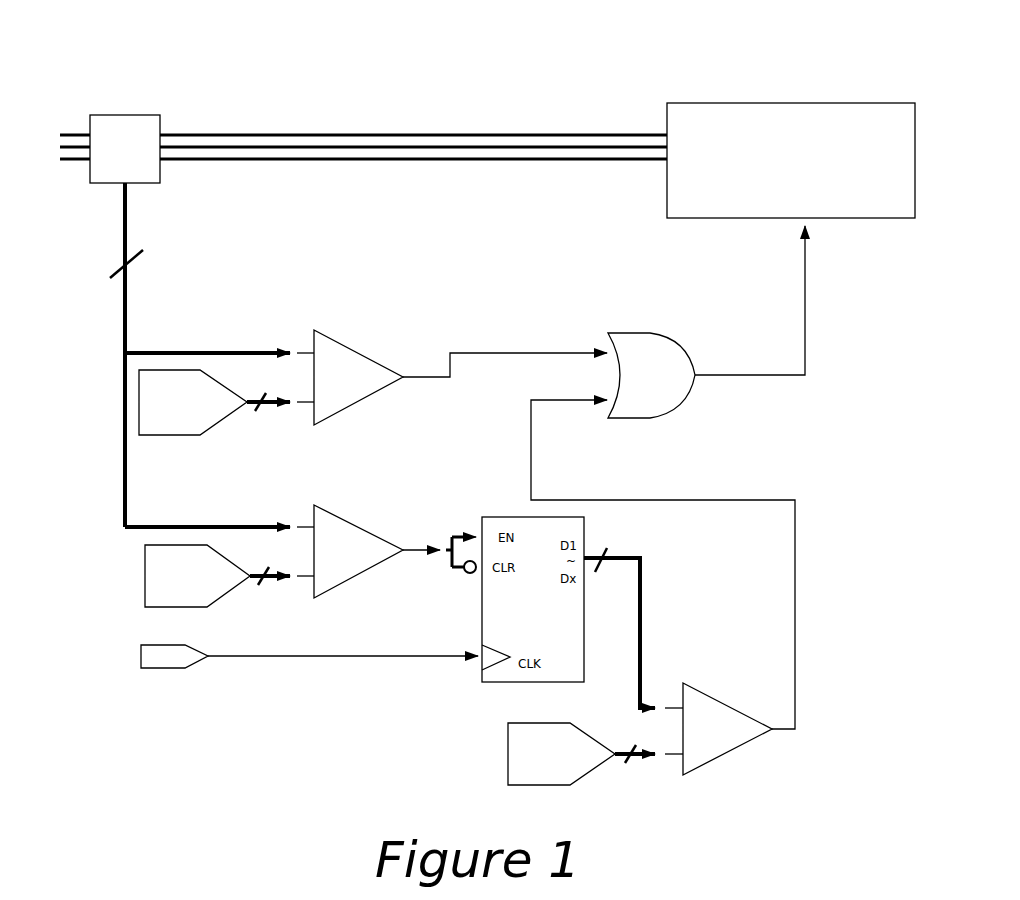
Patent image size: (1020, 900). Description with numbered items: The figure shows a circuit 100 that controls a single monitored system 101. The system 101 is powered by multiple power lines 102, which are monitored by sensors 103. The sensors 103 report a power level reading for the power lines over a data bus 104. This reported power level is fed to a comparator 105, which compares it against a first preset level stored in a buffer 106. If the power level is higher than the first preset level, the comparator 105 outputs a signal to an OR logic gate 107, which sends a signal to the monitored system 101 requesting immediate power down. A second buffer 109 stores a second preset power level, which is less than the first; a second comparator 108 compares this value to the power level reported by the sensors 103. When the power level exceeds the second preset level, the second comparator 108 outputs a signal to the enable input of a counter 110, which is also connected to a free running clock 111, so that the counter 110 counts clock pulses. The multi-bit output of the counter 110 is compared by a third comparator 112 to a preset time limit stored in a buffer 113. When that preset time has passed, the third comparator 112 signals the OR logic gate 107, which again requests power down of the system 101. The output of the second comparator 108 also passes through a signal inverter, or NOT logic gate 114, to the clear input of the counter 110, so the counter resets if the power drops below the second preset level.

The circuit 100 is at (418, 88).
The system 101 is at (790, 98).
The power lines 102 is at (265, 130).
The sensors 103 is at (130, 113).
The data bus 104 is at (118, 240).
The comparator 105 is at (350, 337).
The buffer 106 is at (113, 408).
The OR logic gate 107 is at (640, 325).
The second comparator 108 is at (349, 507).
The second buffer 109 is at (121, 575).
The counter 110 is at (592, 538).
The free running clock 111 is at (138, 657).
The third comparator 112 is at (739, 695).
The buffer 113 is at (505, 740).
The NOT logic gate 114 is at (470, 582).